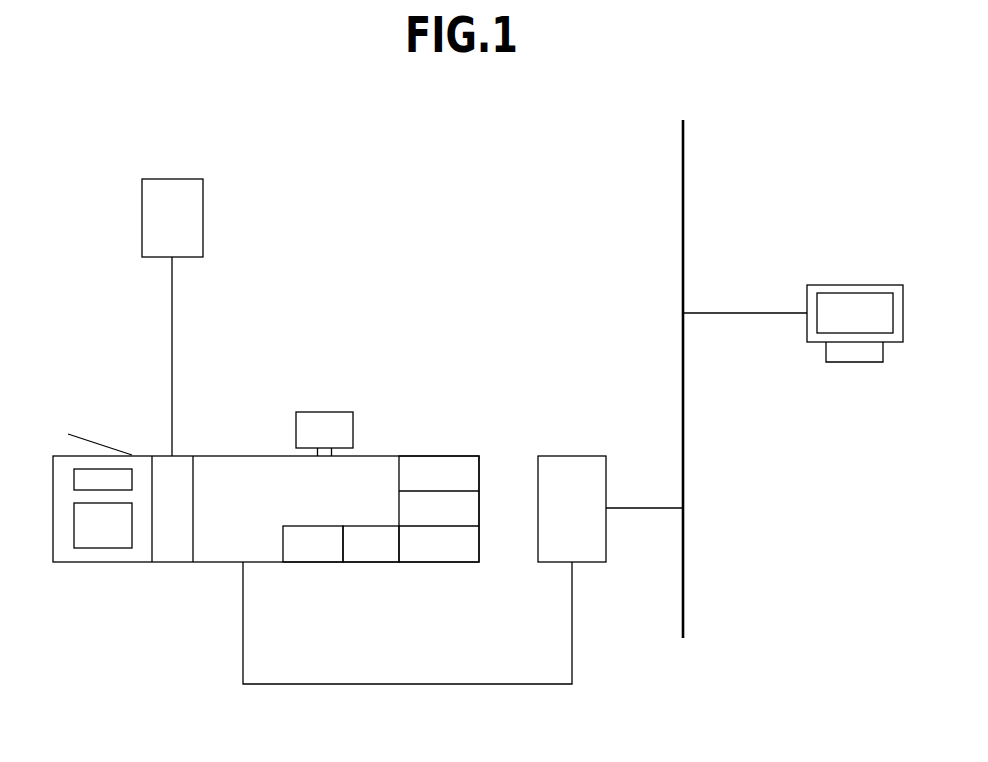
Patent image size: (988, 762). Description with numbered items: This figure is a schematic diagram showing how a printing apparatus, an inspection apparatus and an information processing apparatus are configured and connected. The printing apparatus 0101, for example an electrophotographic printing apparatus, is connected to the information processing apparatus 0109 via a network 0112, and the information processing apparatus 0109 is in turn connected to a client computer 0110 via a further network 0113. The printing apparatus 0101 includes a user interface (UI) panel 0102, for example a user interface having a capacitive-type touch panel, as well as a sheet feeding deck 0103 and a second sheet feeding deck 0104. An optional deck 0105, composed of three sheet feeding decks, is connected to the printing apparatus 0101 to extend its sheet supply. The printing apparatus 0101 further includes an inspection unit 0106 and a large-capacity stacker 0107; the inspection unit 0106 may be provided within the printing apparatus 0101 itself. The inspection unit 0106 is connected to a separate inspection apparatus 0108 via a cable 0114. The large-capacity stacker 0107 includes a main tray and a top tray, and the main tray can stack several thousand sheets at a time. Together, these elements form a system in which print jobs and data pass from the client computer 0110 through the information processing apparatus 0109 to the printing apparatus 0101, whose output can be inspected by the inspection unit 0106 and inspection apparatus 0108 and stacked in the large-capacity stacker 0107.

The printing apparatus 0101 is at (232, 455).
The user interface (UI) panel 0102 is at (325, 412).
The sheet feeding deck 0103 is at (305, 563).
The sheet feeding deck 0104 is at (380, 563).
The optional deck 0105 is at (445, 456).
The inspection unit 0106 is at (175, 563).
The large-capacity stacker 0107 is at (65, 563).
The inspection apparatus 0108 is at (172, 179).
The information processing apparatus 0109 is at (575, 456).
The client computer 0110 is at (853, 285).
The network 0112 is at (473, 683).
The network 0113 is at (684, 590).
The cable 0114 is at (171, 335).